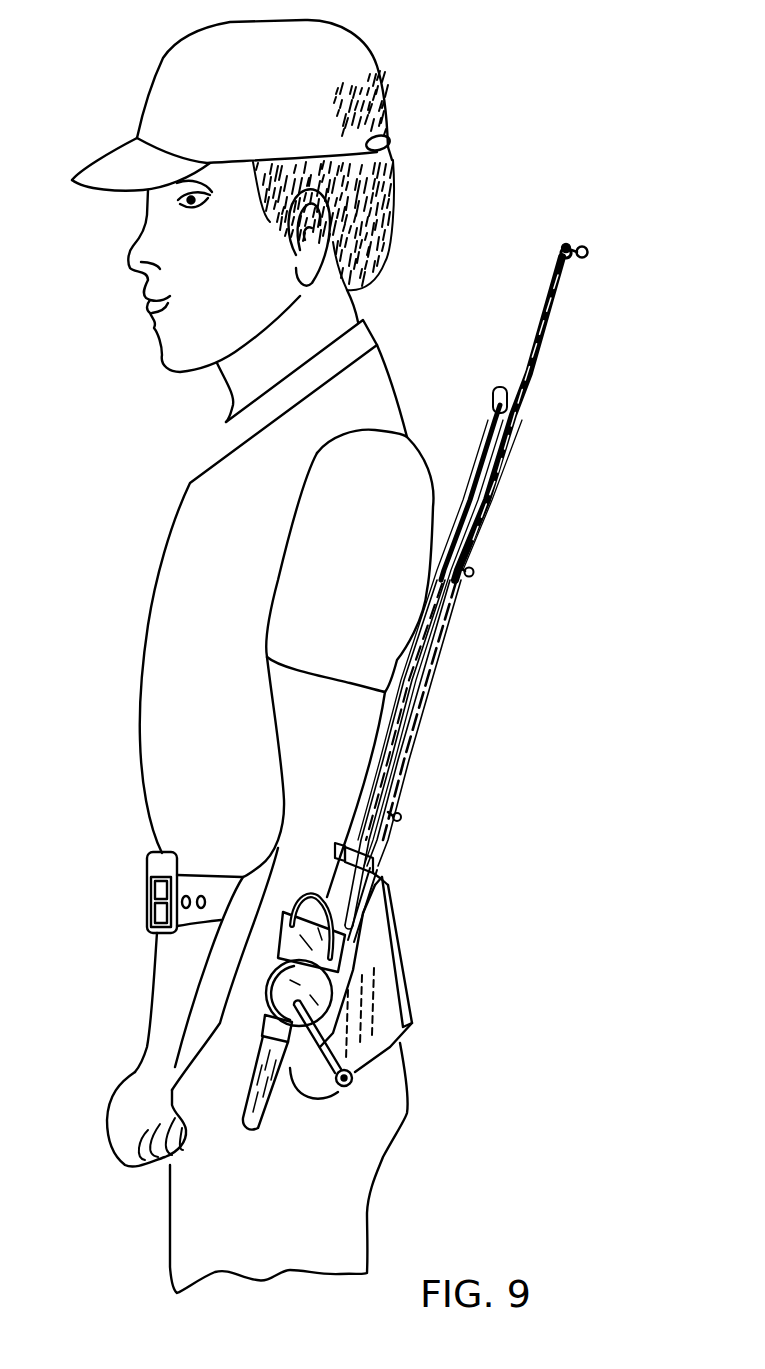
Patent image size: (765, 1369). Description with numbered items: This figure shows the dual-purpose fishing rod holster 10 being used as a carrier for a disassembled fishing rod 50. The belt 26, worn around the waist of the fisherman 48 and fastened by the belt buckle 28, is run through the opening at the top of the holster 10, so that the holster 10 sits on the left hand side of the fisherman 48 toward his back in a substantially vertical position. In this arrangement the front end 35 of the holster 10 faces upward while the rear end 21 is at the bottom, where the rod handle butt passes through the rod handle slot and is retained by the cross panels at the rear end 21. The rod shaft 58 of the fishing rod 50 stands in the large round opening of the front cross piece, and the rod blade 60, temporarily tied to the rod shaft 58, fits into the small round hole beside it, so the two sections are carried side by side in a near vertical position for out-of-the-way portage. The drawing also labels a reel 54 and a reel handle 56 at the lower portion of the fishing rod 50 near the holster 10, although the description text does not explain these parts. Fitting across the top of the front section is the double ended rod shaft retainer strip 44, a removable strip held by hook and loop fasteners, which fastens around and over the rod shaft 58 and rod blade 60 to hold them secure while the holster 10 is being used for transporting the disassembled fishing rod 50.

The dual-purpose fishing rod holster 10 is at (450, 1012).
The rear end 21 is at (307, 1110).
The belt 26 is at (199, 887).
The belt buckle 28 is at (143, 890).
The front end 35 is at (415, 835).
The double ended rod shaft retainer strip 44 is at (375, 866).
The fisherman 48 is at (193, 545).
The fishing rod 50 is at (412, 728).
The reel 54 is at (327, 987).
The reel crank handle 56 is at (352, 1076).
The rod shaft 58 is at (417, 677).
The rod blade 60 is at (528, 372).